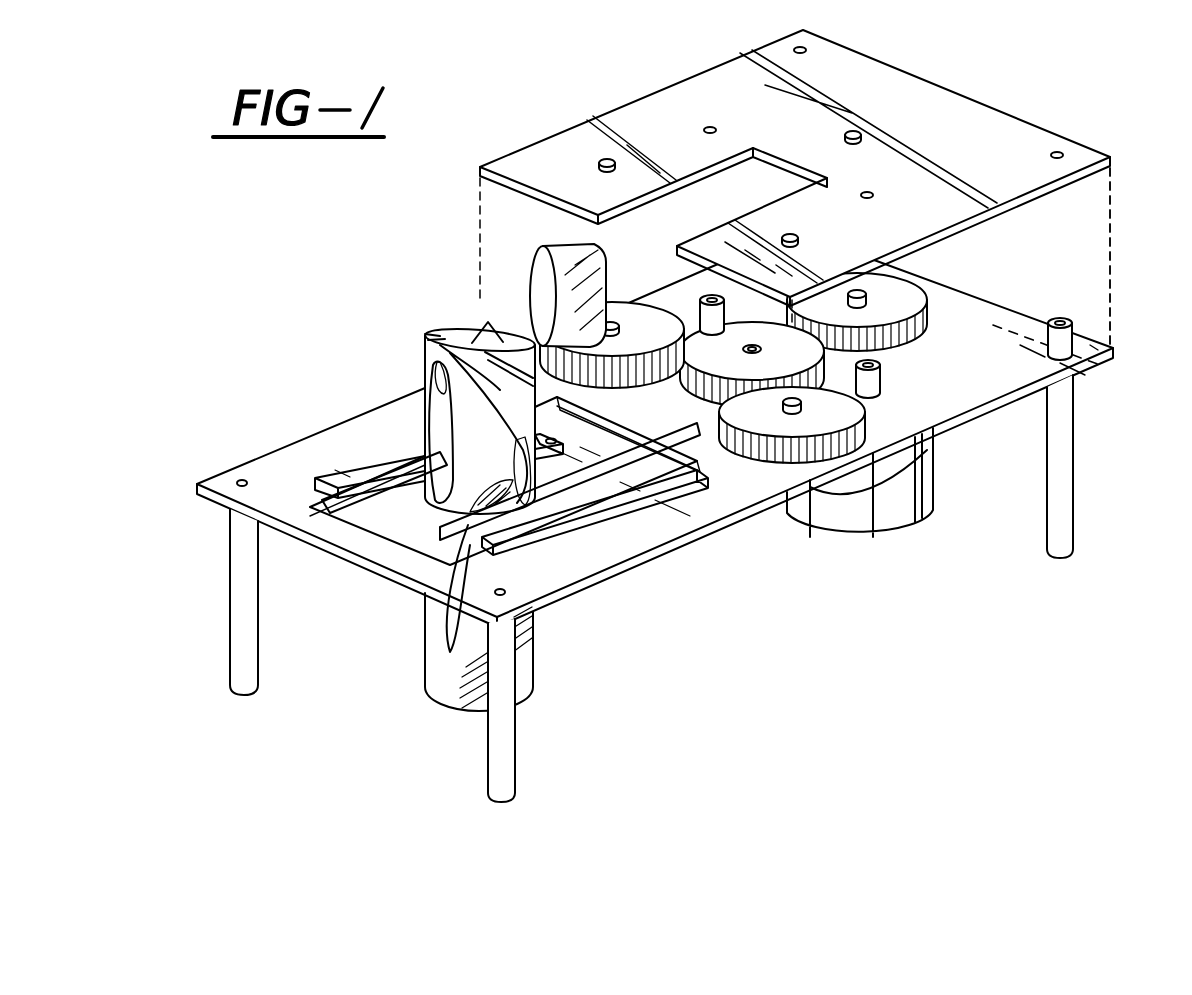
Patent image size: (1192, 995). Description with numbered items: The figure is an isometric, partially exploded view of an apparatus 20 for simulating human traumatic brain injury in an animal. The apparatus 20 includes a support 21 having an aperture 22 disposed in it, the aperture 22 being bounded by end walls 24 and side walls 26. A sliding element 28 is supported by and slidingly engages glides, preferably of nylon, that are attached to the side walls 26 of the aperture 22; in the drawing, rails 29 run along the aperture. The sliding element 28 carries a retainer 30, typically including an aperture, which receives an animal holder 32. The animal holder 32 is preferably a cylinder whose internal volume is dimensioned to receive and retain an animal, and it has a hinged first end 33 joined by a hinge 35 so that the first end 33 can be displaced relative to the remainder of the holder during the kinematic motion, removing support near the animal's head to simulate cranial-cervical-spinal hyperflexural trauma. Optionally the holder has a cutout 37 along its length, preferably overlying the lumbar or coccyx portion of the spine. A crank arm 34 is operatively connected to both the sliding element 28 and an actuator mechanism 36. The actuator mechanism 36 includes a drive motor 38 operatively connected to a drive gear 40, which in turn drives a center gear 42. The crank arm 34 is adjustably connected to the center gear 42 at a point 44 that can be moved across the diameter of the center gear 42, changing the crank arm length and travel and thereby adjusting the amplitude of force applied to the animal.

The apparatus 20 is at (928, 650).
The support 21 is at (1114, 348).
The aperture 22 is at (425, 333).
The end walls 24 is at (396, 536).
The side walls 26 is at (427, 372).
The sliding element 28 is at (563, 490).
The guide rails 29 is at (345, 470).
The retainer 30 is at (350, 463).
The animal holder 32 is at (425, 333).
The hinged first end 33 is at (452, 324).
The crank arm 34 is at (607, 440).
The hinge 35 is at (538, 342).
The actuator mechanism 36 is at (950, 312).
The cutout 37 is at (448, 700).
The drive motor 38 is at (905, 507).
The drive gear 40 is at (907, 293).
The center gear 42 is at (763, 330).
The point 44 is at (677, 373).